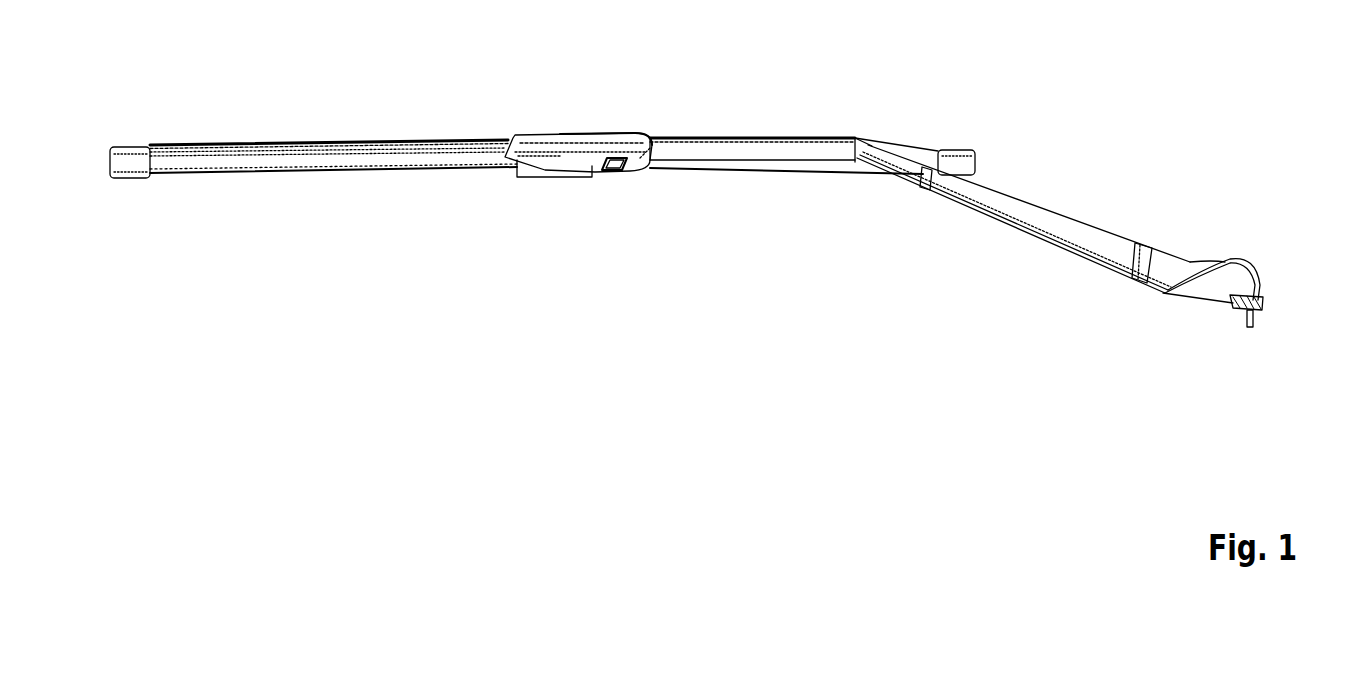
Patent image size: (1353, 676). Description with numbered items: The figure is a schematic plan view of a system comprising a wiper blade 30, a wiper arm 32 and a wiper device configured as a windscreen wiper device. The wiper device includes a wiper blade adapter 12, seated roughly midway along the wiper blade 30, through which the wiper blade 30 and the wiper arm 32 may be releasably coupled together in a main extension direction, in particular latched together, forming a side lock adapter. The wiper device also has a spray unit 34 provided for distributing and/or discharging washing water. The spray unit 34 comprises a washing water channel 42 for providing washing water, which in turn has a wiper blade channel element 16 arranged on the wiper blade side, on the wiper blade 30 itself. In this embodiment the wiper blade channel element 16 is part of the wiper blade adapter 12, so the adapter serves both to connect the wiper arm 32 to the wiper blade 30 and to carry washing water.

The wiper blade adapter 12 is at (542, 133).
The wiper blade channel element 16 is at (656, 143).
The wiper blade 30 is at (352, 177).
The wiper arm 32 is at (994, 161).
The spray unit 34 is at (625, 131).
The washing water channel 42 is at (591, 150).